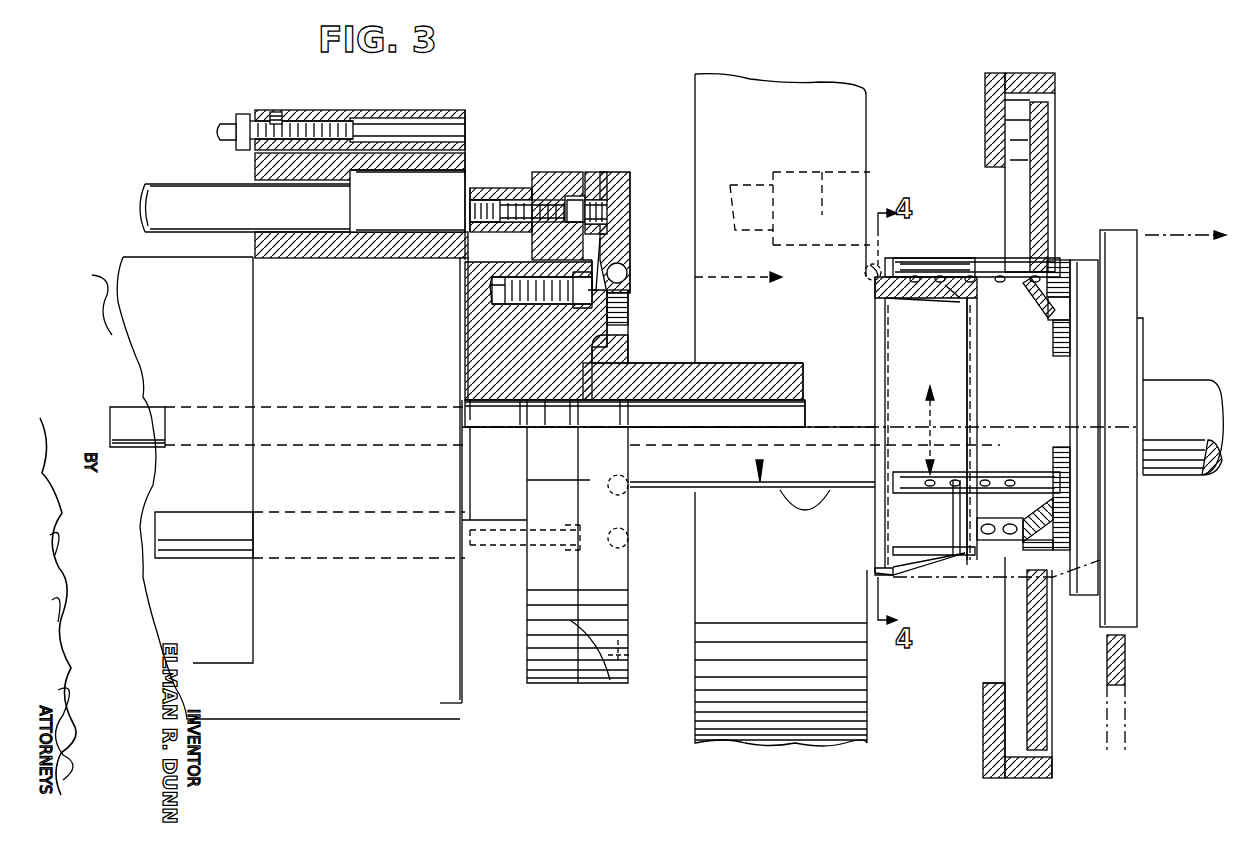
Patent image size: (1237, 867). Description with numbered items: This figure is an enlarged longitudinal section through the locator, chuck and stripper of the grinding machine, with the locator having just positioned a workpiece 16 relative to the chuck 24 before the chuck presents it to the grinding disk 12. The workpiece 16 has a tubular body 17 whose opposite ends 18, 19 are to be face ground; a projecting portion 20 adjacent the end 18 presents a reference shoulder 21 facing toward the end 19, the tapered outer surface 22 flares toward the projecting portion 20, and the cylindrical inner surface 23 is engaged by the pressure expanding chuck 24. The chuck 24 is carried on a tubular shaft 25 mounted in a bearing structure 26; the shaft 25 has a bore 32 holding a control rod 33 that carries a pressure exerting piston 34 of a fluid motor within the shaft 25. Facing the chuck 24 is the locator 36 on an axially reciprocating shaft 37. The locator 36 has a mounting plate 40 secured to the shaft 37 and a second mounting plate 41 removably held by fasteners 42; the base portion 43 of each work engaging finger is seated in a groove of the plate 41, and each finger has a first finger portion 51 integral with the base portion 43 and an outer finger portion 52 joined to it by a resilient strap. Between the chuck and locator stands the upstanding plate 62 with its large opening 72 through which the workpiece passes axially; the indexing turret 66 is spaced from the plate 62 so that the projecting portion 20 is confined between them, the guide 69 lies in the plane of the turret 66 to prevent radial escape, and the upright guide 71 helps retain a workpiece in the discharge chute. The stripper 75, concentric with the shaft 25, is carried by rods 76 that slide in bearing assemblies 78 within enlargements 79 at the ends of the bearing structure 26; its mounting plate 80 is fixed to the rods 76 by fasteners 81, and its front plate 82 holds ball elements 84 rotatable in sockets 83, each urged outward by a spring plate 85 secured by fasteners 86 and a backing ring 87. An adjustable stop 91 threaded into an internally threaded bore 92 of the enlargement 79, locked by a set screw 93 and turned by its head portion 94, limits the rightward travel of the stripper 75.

The grinding disk 12 is at (858, 118).
The workpiece 16 is at (900, 298).
The tubular body 17 is at (917, 445).
The end 18 is at (880, 287).
The end 19 is at (985, 298).
The projecting portion 20 is at (880, 275).
The reference shoulder 21 is at (888, 570).
The tapered outer surface 22 is at (947, 298).
The cylindrical inner surface 23 is at (910, 298).
The chuck 24 is at (895, 362).
The shaft 25 is at (102, 295).
The bearing structure 26 is at (150, 273).
The bore 32 is at (635, 381).
The control rod 33 is at (130, 413).
The pressure exerting piston 34 is at (595, 405).
The locator 36 is at (1128, 227).
The shaft 37 is at (1180, 388).
The mounting plate 40 is at (1138, 295).
The second mounting plate 41 is at (1083, 258).
The fasteners 42 is at (1053, 325).
The base portion 43 is at (1022, 295).
The first finger portion 51 is at (973, 258).
The outer finger portion 52 is at (920, 253).
The upstanding plate 62 is at (983, 702).
The indexing turret 66 is at (1036, 708).
The guide 69 is at (1055, 83).
The upright guide 71 is at (1127, 648).
The opening 72 is at (983, 683).
The stripper 75 is at (620, 164).
The rods 76 is at (470, 203).
The bearing assemblies 78 is at (448, 170).
The enlargements 79 is at (455, 110).
The mounting plate 80 is at (559, 172).
The fasteners 81 is at (514, 192).
The front plate 82 is at (623, 195).
The sockets 83 is at (618, 267).
The ball elements 84 is at (628, 273).
The spring plate 85 is at (616, 218).
The fasteners 86 is at (621, 212).
The backing ring 87 is at (598, 172).
The adjustable stop 91 is at (227, 122).
The internally threaded bore 92 is at (320, 123).
The set screw 93 is at (275, 112).
The head portion 94 is at (245, 112).